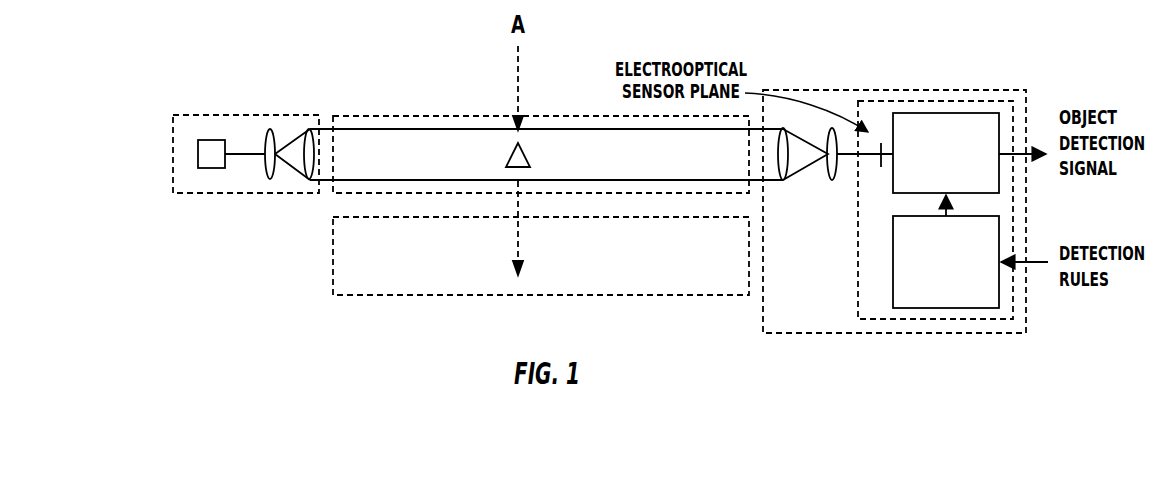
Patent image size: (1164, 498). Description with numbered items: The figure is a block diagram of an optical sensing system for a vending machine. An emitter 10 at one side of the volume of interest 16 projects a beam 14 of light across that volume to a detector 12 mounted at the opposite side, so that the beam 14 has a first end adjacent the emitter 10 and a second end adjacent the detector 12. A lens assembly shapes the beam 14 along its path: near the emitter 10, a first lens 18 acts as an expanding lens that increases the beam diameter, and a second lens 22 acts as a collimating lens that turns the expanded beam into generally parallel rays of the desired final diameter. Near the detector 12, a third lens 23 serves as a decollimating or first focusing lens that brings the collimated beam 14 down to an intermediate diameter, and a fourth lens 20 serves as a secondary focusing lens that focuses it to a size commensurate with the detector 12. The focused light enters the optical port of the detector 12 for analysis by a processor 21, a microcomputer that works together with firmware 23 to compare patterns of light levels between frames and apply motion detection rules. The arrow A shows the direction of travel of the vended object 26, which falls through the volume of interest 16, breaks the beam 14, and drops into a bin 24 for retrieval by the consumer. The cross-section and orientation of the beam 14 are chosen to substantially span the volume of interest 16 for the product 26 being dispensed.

The emitter 10 is at (207, 140).
The detector 12 is at (975, 90).
The beam 14 is at (408, 130).
The volume of interest 16 is at (553, 115).
The first lens 18 is at (268, 180).
The fourth lens 20 is at (833, 183).
The processor 21 is at (990, 120).
The second lens 22 is at (307, 182).
The third lens 23 is at (781, 181).
The bin 24 is at (427, 283).
The vended object 26 is at (522, 170).